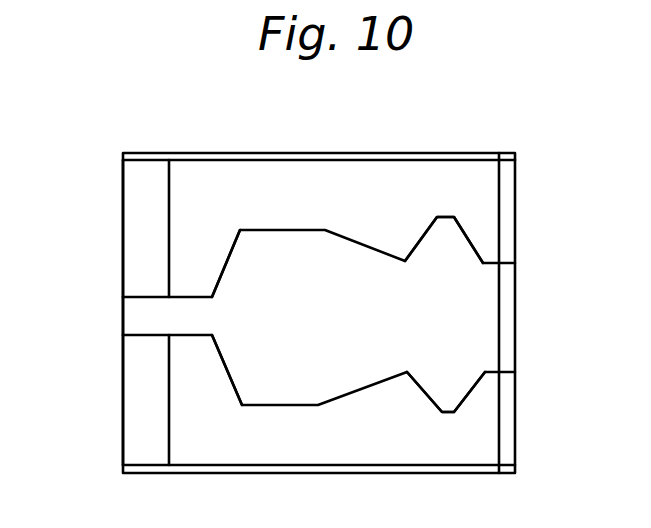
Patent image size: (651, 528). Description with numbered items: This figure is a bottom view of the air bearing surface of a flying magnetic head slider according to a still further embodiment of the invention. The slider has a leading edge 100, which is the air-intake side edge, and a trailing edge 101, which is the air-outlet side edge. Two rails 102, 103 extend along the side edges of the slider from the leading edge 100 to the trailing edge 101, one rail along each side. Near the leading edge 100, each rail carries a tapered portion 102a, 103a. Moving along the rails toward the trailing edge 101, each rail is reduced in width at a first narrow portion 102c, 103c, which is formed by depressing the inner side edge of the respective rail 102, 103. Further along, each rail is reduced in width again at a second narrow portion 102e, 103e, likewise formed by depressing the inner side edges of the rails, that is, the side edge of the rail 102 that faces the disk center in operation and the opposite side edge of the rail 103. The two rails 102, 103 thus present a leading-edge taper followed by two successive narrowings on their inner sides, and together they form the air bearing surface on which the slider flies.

The leading edge 100 is at (123, 330).
The trailing edge 101 is at (515, 312).
The rail 102 is at (275, 202).
The tapered portion 102a is at (142, 217).
The first narrow portion 102c is at (245, 197).
The second narrow portion 102e is at (457, 198).
The rail 103 is at (273, 429).
The tapered portion 103a is at (140, 425).
The first narrow portion 103c is at (263, 427).
The second narrow portion 103e is at (455, 433).